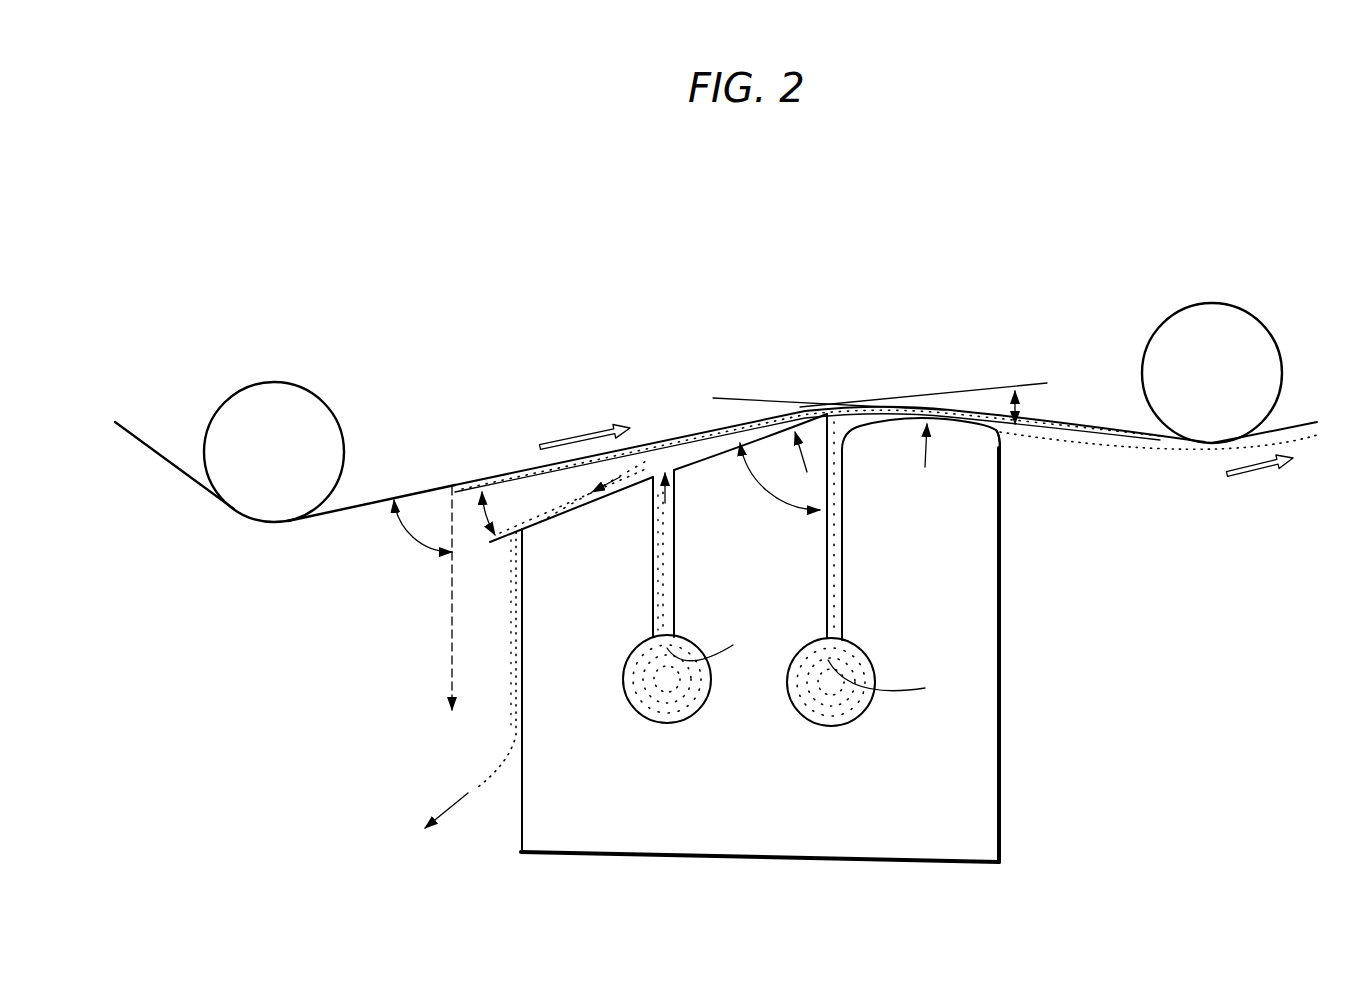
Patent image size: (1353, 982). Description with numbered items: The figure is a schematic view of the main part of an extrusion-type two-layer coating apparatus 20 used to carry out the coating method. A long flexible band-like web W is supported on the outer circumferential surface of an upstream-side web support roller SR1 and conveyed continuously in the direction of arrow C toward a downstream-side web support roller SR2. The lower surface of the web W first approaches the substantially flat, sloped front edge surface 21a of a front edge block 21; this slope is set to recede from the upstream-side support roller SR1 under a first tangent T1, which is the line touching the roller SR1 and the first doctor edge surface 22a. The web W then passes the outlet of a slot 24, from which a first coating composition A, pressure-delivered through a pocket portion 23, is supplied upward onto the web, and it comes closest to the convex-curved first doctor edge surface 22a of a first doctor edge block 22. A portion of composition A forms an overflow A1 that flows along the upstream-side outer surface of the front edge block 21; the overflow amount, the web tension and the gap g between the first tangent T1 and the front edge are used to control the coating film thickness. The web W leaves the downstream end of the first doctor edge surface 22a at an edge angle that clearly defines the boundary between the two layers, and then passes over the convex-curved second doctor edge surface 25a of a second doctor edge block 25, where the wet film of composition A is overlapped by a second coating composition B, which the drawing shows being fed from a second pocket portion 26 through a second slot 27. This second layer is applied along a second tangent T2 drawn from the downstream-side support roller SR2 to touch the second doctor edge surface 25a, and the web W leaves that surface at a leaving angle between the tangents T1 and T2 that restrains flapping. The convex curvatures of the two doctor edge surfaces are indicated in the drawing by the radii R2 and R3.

The extrusion-type coating apparatus 20 is at (598, 280).
The front edge block 21 is at (592, 711).
The front edge surface 21a is at (590, 503).
The first doctor edge block 22 is at (767, 603).
The first doctor edge surface 22a is at (710, 457).
The pocket portion 23 is at (692, 718).
The slot 24 is at (655, 588).
The second doctor edge block 25 is at (962, 548).
The second doctor edge surface 25a is at (1003, 465).
The second liquid pocket 26 is at (847, 723).
The second slot 27 is at (843, 562).
The web W is at (168, 457).
The upstream-side web support roller SR1 is at (308, 385).
The downstream-side web support roller SR2 is at (1172, 320).
The first tangent T1 is at (1047, 381).
The second tangent T2 is at (738, 396).
The first coating composition A is at (711, 647).
The second coating composition B is at (888, 682).
The web conveying direction C is at (917, 457).
The gap g is at (448, 661).
The overflow A1 is at (478, 786).
The radius of curvature of middle block surface R2 is at (800, 456).
The radius of curvature of front edge block surface R3 is at (925, 467).